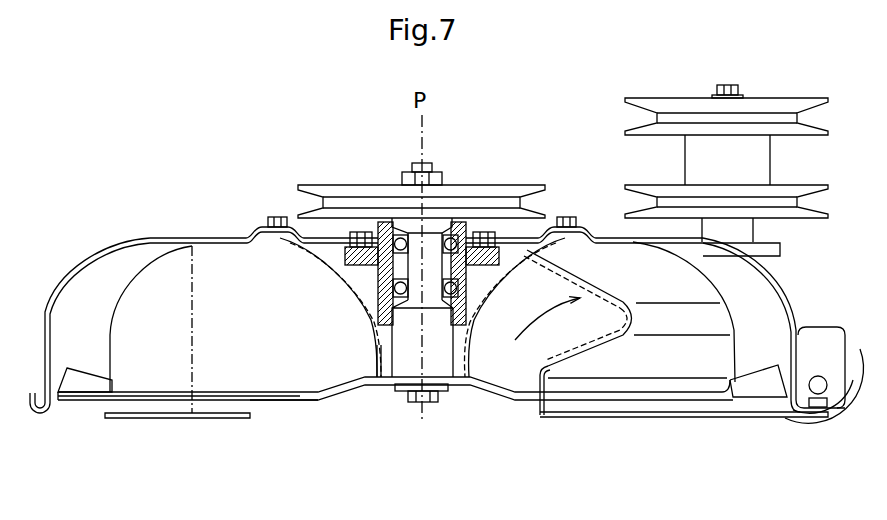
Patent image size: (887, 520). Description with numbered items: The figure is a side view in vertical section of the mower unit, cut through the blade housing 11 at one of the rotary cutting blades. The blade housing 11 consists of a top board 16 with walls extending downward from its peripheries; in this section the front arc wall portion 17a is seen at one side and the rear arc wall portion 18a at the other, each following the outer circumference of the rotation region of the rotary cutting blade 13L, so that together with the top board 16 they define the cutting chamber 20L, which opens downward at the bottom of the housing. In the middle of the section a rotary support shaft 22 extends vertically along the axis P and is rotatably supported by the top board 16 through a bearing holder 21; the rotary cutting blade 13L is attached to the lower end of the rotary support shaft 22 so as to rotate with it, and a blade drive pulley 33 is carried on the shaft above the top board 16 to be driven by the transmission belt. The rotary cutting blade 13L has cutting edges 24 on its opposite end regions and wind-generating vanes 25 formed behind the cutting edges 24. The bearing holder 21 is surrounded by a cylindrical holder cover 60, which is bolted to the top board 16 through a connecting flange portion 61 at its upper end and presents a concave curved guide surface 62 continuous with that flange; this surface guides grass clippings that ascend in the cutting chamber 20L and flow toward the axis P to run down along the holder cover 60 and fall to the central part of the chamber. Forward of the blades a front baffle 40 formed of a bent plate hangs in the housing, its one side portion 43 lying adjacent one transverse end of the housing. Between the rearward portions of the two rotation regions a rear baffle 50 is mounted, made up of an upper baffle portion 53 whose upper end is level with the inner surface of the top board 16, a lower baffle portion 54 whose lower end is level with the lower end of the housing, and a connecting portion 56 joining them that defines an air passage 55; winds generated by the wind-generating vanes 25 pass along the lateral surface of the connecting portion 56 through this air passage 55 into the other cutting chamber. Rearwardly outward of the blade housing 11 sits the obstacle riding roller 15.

The blade housing 11 is at (172, 238).
The top board 16 is at (220, 238).
The front arc wall portion 17a is at (48, 352).
The rear arc wall portion 18a is at (798, 347).
The blade drive pulley 33 is at (497, 190).
The connecting flange portion 61 is at (265, 243).
The curved guide surface 62 is at (335, 268).
The bearing holder 21 is at (377, 268).
The holder cover 60 is at (375, 360).
The rotary support shaft 22 is at (404, 362).
The rotary cutting blade 13L is at (322, 400).
The cutting chamber 20L is at (280, 410).
The cutting edge 24 is at (163, 418).
The one side portion 43 is at (132, 392).
The front baffle 40 is at (197, 368).
The wind-generating vane 25 is at (83, 383).
The upper baffle portion 53 is at (540, 262).
The air passage 55 is at (533, 331).
The connecting portion 56 is at (620, 320).
The rear baffle 50 is at (537, 414).
The lower baffle portion 54 is at (600, 405).
The obstacle riding roller 15 is at (842, 417).